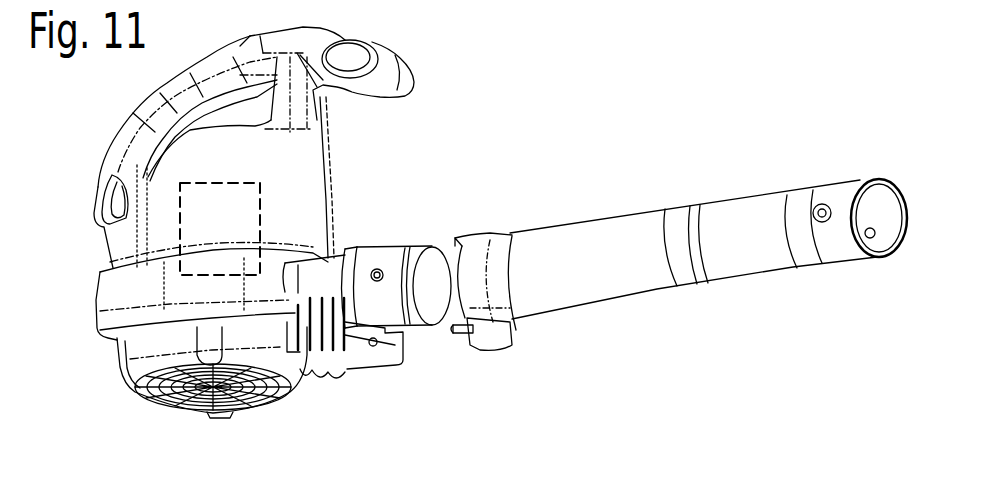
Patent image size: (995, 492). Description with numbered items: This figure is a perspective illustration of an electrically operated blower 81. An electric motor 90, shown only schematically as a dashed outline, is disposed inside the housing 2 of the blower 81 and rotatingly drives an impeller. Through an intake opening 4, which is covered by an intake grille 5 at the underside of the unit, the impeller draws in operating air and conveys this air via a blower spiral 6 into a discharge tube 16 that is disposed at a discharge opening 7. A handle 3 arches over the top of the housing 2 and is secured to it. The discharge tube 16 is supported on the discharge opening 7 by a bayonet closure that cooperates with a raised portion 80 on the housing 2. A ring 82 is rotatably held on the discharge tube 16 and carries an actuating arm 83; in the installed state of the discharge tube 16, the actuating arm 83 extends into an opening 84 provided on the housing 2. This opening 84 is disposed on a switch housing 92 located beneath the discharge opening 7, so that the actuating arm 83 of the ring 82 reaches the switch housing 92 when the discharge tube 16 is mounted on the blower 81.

The housing 2 is at (300, 193).
The handle 3 is at (200, 77).
The intake opening 4 is at (198, 403).
The intake grille 5 is at (237, 393).
The blower spiral 6 is at (140, 288).
The discharge opening 7 is at (427, 268).
The discharge tube 16 is at (617, 228).
The raised portion 80 is at (376, 268).
The blower 81 is at (497, 108).
The ring 82 is at (474, 243).
The actuating arm 83 is at (457, 334).
The opening 84 is at (375, 355).
The electric motor 90 is at (178, 210).
The switch housing 92 is at (340, 360).